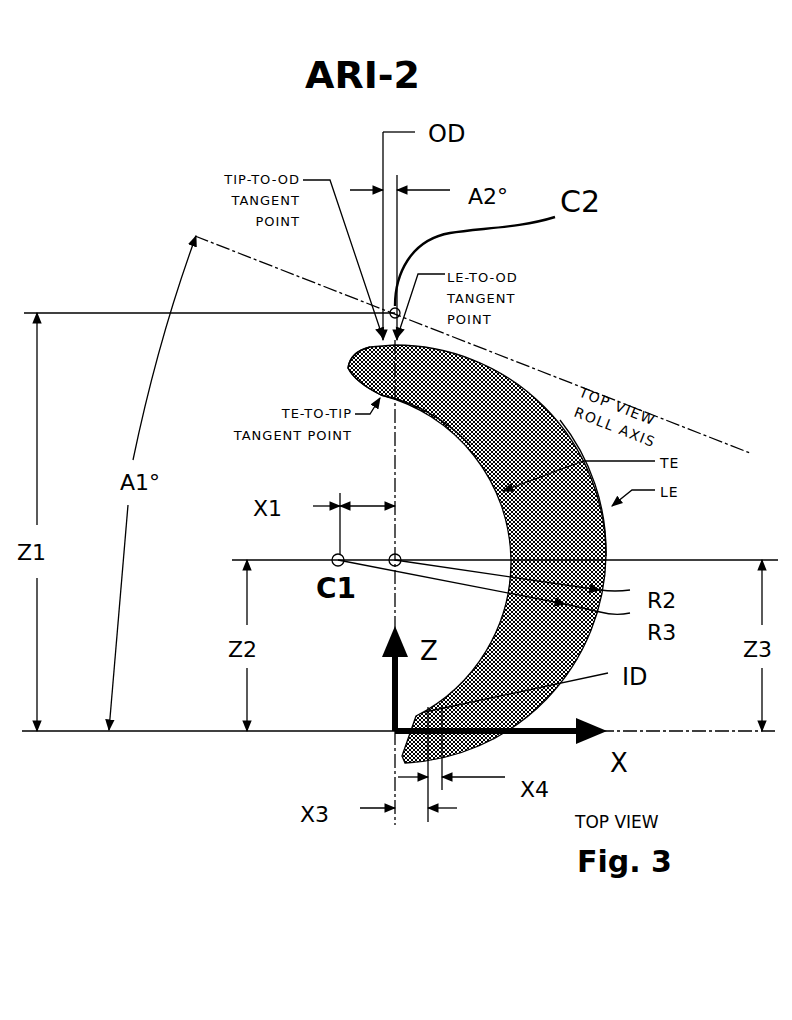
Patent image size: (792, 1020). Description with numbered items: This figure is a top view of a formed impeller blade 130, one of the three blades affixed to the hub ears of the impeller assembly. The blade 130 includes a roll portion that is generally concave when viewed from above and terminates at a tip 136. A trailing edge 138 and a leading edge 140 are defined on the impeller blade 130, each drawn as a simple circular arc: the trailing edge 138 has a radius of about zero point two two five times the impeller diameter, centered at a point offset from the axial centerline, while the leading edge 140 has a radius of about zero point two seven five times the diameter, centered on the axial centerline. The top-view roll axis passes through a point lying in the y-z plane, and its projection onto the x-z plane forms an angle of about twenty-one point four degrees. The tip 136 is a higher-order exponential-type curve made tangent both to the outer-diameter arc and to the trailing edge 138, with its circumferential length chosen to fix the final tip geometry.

The impeller blade 130 is at (673, 305).
The tip 136 is at (345, 370).
The trailing edge 138 is at (455, 437).
The leading edge 140 is at (607, 547).